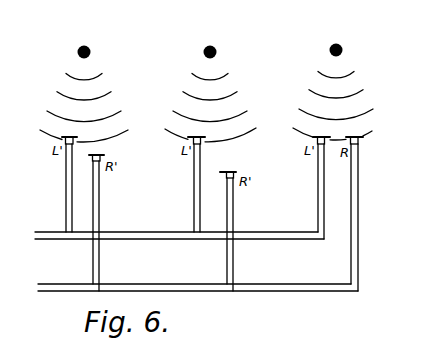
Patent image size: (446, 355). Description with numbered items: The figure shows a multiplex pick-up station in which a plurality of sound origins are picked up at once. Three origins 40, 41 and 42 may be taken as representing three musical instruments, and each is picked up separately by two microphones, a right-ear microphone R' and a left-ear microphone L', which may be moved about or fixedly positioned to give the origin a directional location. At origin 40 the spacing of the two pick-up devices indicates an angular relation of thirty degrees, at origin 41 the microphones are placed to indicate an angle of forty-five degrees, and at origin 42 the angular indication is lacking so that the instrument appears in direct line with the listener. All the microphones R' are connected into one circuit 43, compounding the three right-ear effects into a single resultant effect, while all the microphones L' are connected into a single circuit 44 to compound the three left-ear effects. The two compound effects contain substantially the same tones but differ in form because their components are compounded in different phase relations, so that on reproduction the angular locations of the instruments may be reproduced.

The origin 40 is at (89, 47).
The origin 41 is at (215, 47).
The origin 42 is at (339, 44).
The circuit 43 is at (53, 287).
The circuit 44 is at (35, 238).